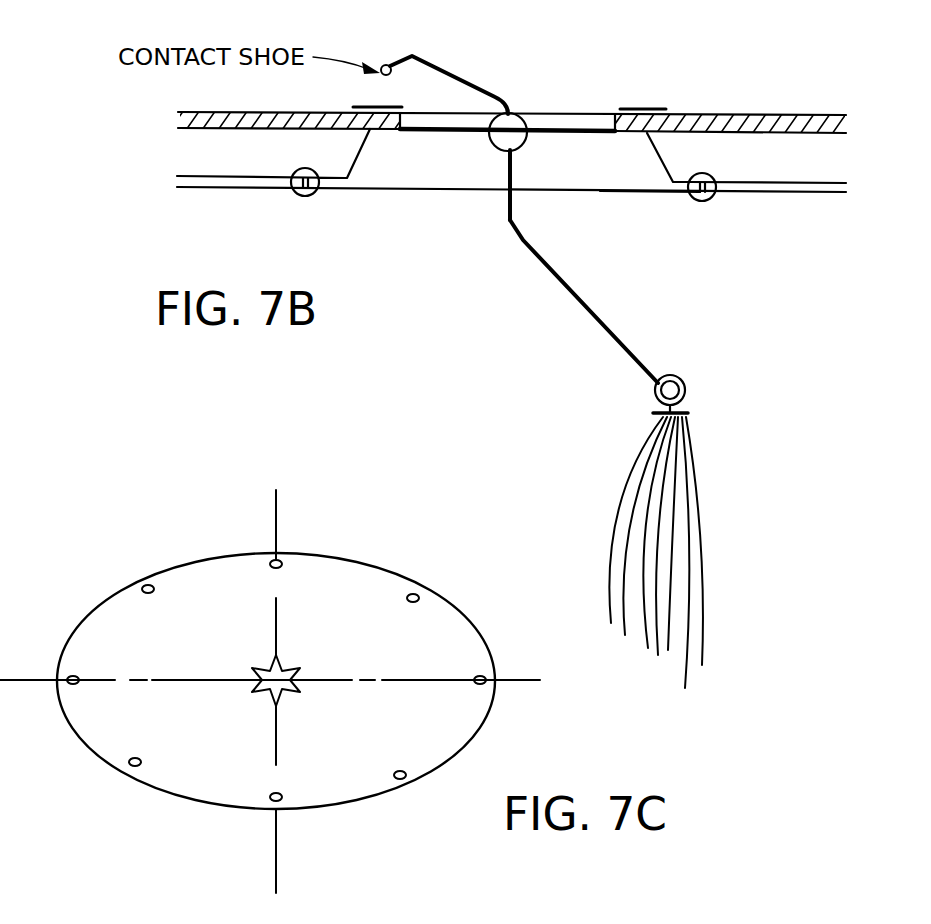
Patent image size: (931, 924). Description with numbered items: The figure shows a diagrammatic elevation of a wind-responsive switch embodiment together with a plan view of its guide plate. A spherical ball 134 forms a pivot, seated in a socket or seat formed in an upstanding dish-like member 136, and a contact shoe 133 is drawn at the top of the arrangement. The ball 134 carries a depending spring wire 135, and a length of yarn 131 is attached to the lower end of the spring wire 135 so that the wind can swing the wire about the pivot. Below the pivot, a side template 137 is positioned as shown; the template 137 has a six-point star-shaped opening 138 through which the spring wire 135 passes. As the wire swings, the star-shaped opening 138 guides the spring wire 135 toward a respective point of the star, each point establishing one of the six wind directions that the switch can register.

In FIG. 7B, the yarn 131 is at (677, 468).
In FIG. 7B, the contact shoe 133 is at (383, 63).
In FIG. 7B, the spherical ball 134 is at (518, 114).
In FIG. 7B, the spring wire 135 is at (588, 302).
In FIG. 7B, the dish-like member 136 is at (663, 160).
In FIG. 7B, the side template 137 is at (648, 193).
In FIG. 7C, the side template 137 is at (318, 553).
In FIG. 7B, the star-shaped opening 138 is at (496, 203).
In FIG. 7C, the star-shaped opening 138 is at (290, 695).